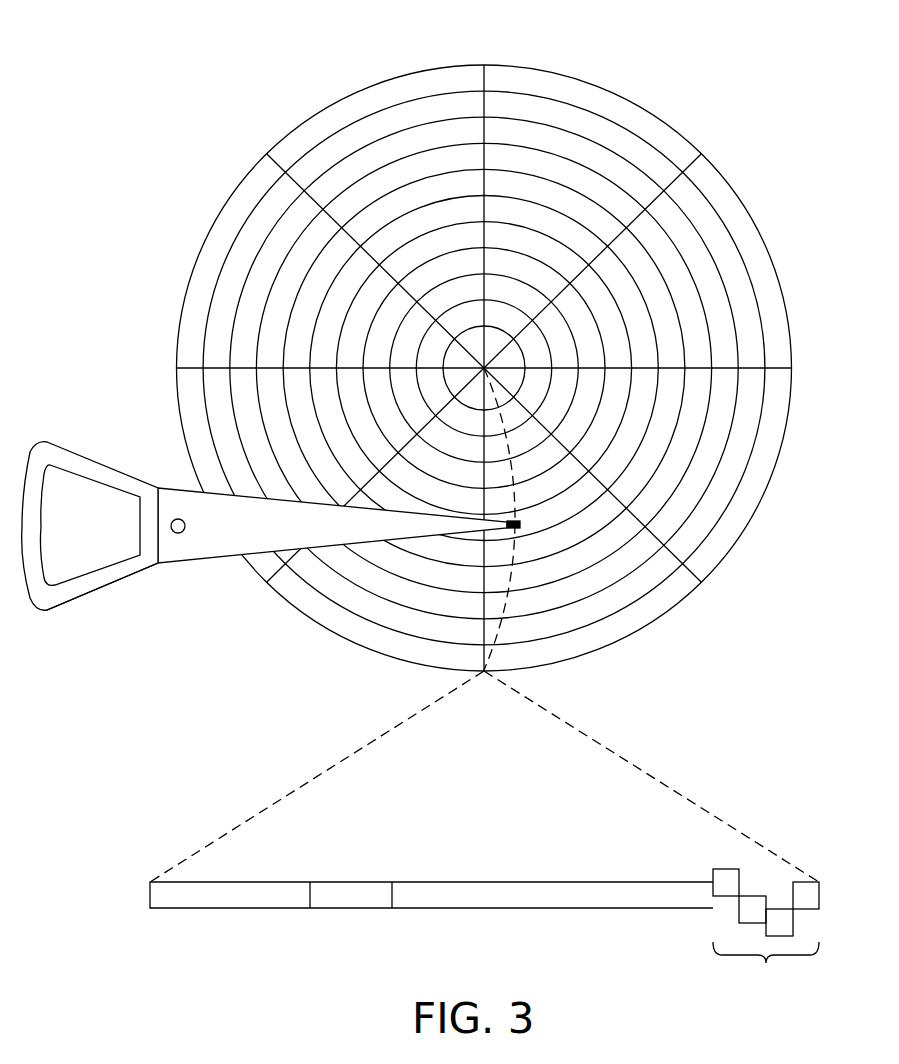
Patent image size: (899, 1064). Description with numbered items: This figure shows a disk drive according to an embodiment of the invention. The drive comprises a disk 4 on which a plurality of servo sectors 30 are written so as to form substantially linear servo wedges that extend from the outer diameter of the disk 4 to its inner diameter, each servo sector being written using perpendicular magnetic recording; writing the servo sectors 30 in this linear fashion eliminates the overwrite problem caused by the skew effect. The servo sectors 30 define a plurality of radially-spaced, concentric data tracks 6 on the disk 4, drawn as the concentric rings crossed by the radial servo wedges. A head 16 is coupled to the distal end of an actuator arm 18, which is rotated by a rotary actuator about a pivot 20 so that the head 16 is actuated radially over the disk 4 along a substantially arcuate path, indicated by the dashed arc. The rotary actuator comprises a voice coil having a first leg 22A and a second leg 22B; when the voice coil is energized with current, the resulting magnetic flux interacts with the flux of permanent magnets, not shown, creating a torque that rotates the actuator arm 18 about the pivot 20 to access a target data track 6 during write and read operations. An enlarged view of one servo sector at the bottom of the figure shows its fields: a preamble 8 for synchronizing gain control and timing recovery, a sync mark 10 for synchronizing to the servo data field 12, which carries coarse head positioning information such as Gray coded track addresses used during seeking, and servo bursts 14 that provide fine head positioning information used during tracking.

The disk 4 is at (258, 70).
The data track 6 is at (588, 126).
The preamble 8 is at (212, 912).
The sync mark 10 is at (348, 912).
The servo data field 12 is at (540, 912).
The servo bursts 14 is at (484, 902).
The head 16 is at (516, 518).
The actuator arm 18 is at (195, 565).
The pivot 20 is at (185, 526).
The first leg 22A is at (83, 460).
The second leg 22B is at (85, 590).
The servo sectors 30 is at (479, 390).